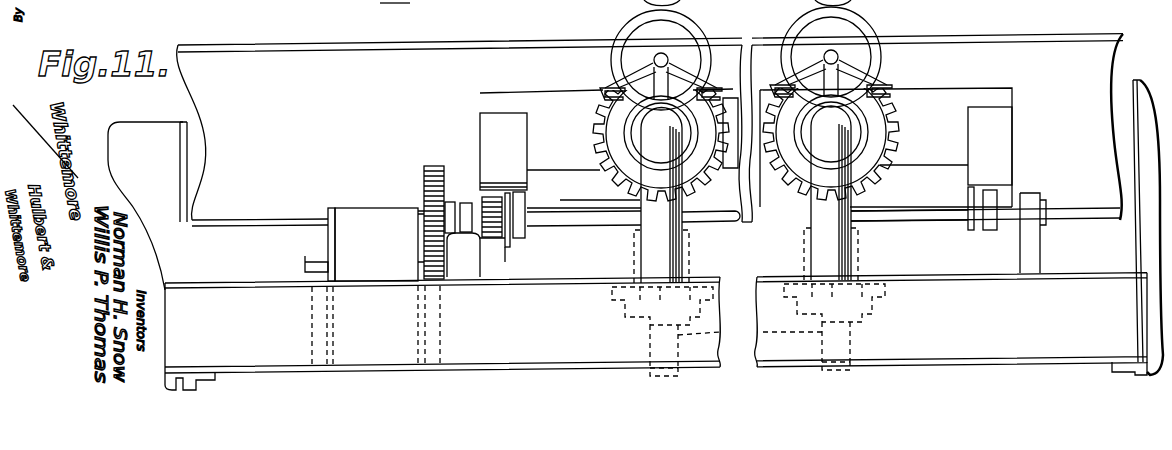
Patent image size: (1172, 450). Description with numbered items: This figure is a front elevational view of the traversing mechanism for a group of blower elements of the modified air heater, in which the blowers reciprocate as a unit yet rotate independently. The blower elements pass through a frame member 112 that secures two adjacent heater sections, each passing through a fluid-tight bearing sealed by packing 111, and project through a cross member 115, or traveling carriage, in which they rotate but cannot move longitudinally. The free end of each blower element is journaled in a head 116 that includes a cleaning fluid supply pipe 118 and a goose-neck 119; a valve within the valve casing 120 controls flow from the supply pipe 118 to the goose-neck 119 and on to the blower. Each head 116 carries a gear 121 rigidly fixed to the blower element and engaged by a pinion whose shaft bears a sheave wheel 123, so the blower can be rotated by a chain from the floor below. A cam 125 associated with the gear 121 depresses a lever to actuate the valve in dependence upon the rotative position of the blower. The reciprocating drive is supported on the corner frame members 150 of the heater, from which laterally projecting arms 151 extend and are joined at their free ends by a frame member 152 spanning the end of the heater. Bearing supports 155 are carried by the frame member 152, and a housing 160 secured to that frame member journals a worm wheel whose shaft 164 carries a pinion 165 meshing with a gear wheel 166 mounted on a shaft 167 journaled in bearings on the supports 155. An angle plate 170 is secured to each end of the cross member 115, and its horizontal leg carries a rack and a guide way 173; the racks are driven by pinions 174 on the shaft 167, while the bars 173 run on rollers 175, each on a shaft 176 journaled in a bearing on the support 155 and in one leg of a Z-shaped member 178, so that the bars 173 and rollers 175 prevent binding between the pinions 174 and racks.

The packing 111 is at (646, 6).
The frame member 112 is at (287, 52).
The cross member 115 is at (512, 100).
The head 116 is at (645, 130).
The cleaning fluid supply pipe 118 is at (790, 336).
The goose-neck 119 is at (748, 194).
The valve casing 120 is at (807, 252).
The gear 121 is at (625, 210).
The sheave wheel 123 is at (617, 34).
The cam 125 is at (620, 148).
The corner frame member 150 is at (150, 133).
The arm 151 is at (203, 373).
The frame member 152 is at (207, 300).
The bearing support 155 is at (478, 272).
The housing 160 is at (355, 222).
The shaft 164 is at (310, 266).
The pinion 165 is at (417, 288).
The gear wheel 166 is at (430, 165).
The shaft 167 is at (652, 188).
The angle plate 170 is at (480, 127).
The guide way 173 is at (518, 188).
The pinion 174 is at (495, 245).
The roller 175 is at (520, 242).
The shaft 176 is at (492, 215).
The Z-shaped member 178 is at (495, 252).